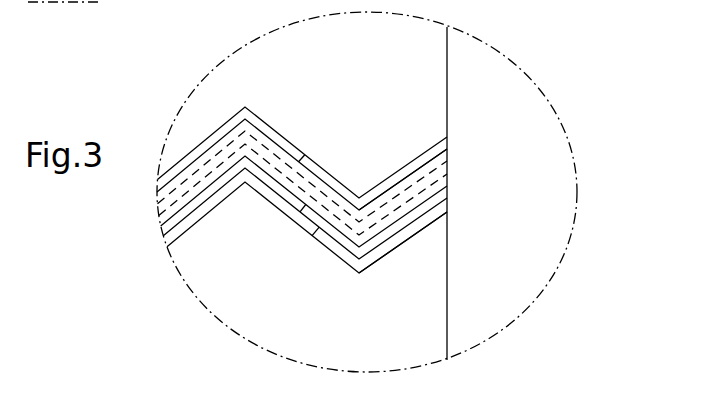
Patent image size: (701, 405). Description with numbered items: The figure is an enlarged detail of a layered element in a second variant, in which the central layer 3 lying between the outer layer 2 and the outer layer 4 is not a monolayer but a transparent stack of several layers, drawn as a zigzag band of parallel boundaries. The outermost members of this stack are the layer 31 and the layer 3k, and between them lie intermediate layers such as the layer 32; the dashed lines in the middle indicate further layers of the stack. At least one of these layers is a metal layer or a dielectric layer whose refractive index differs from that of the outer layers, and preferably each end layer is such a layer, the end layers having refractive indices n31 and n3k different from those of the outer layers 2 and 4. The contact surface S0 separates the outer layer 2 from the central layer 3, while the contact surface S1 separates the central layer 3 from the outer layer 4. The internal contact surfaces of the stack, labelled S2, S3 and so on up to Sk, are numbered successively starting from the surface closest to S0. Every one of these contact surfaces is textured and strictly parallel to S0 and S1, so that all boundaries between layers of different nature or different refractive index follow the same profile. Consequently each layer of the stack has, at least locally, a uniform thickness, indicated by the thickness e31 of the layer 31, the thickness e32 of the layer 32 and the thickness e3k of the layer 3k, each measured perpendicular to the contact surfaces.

The outer layer 2 is at (440, 331).
The central layer 3 is at (148, 187).
The outer layer 4 is at (435, 51).
The layer 3k is at (337, 149).
The layer 31 is at (342, 262).
The layer 32 is at (343, 222).
The refractive index n3k is at (425, 158).
The refractive index n31 is at (352, 268).
The thickness e3k is at (287, 175).
The thickness e32 is at (315, 193).
The thickness e31 is at (327, 218).
The contact surface S1 is at (458, 137).
The contact surface Sk is at (458, 149).
The contact surface S3 is at (458, 186).
The contact surface S2 is at (458, 198).
The contact surface S0 is at (458, 212).